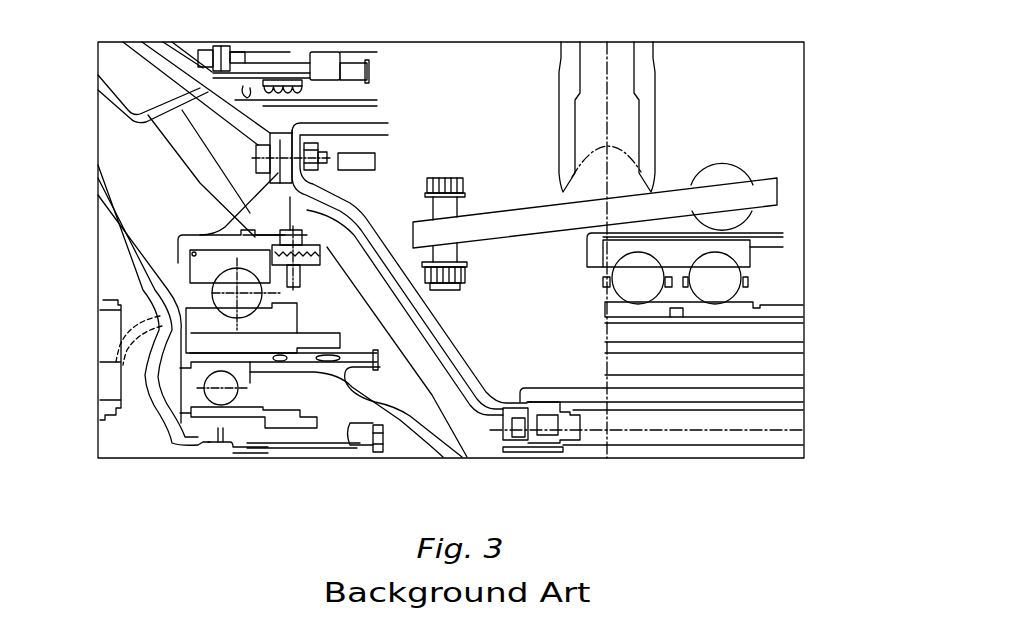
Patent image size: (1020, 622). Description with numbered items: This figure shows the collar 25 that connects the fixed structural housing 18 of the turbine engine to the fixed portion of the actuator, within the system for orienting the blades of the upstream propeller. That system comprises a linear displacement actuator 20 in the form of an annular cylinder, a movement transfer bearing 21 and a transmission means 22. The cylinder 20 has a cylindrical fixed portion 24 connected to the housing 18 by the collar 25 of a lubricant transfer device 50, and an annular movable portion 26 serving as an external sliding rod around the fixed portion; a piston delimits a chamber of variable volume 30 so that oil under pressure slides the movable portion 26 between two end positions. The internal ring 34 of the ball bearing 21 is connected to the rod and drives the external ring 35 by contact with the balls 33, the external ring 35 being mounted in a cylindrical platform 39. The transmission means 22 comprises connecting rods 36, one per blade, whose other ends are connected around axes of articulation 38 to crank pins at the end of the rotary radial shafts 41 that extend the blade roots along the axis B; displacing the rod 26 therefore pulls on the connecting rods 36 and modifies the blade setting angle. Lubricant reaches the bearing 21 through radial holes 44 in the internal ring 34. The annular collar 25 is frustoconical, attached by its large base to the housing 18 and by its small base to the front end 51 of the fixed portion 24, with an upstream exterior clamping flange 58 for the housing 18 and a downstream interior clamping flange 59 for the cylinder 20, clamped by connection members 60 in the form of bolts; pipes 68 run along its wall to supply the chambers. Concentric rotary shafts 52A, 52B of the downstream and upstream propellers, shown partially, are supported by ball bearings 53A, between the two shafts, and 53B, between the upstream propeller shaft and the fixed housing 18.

The structural housing 18 is at (215, 82).
The linear displacement actuator 20 is at (762, 456).
The movement transfer bearing 21 is at (758, 263).
The transmission means 22 is at (503, 187).
The cylindrical fixed portion 24 is at (793, 395).
The collar 25 is at (364, 213).
The annular movable portion 26 is at (793, 335).
The chamber of variable volume 30 is at (655, 405).
The balls 33 is at (733, 277).
The internal ring 34 is at (745, 303).
The external ring 35 is at (740, 250).
The connecting rods 36 is at (673, 237).
The axes of articulation 38 is at (440, 212).
The cylindrical platform 39 is at (660, 210).
The rotary radial shafts 41 is at (580, 42).
The radial holes 44 is at (678, 317).
The lubricant transfer device 50 is at (458, 333).
The front end 51 is at (518, 390).
The rotary shaft of the downstream propeller 52A is at (207, 436).
The rotary shaft of the upstream propeller 52B is at (425, 427).
The ball bearing 53A is at (188, 387).
The ball bearing 53B is at (201, 298).
The upstream exterior clamping flange 58 is at (275, 130).
The downstream interior clamping flange 59 is at (532, 440).
The connection members 60 is at (311, 150).
The pipes 68 is at (420, 356).
The axis of the blades B is at (607, 55).